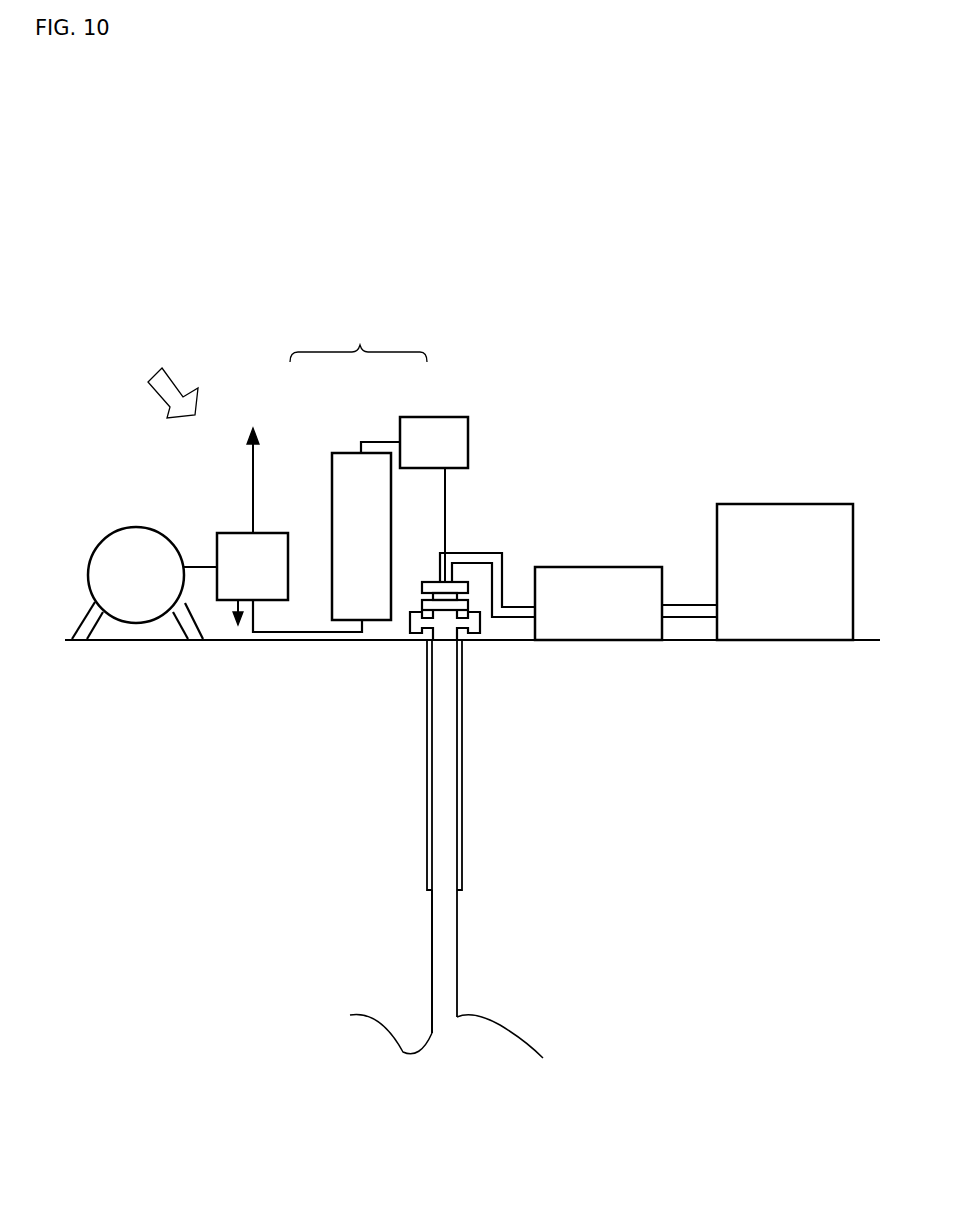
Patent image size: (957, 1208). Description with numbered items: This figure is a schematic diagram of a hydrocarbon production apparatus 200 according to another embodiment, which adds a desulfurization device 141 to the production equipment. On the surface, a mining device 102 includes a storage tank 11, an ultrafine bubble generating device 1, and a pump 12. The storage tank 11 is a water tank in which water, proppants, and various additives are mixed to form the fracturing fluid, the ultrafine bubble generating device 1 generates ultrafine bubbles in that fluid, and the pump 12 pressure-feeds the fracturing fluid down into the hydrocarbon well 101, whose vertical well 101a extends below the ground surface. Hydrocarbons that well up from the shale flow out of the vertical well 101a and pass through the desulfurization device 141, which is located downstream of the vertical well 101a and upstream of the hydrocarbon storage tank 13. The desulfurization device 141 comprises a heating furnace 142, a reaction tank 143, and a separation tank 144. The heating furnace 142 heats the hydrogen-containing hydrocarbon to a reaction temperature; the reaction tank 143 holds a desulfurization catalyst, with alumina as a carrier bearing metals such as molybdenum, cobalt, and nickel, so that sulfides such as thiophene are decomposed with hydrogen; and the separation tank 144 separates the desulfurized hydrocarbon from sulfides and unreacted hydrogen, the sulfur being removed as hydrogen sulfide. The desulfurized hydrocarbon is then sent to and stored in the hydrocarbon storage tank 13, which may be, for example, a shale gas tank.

The hydrocarbon production apparatus 200 is at (158, 381).
The hydrocarbon storage tank 13 is at (162, 548).
The desulfurization device 141 is at (358, 340).
The separation tank 144 is at (273, 533).
The reaction tank 143 is at (345, 453).
The heating furnace 142 is at (435, 417).
The pump 12 is at (458, 587).
The ultrafine bubble generating device 1 is at (612, 590).
The storage tank 11 is at (815, 520).
The mining device 102 is at (660, 528).
The hydrocarbon well 101 is at (472, 958).
The vertical well 101a is at (432, 978).